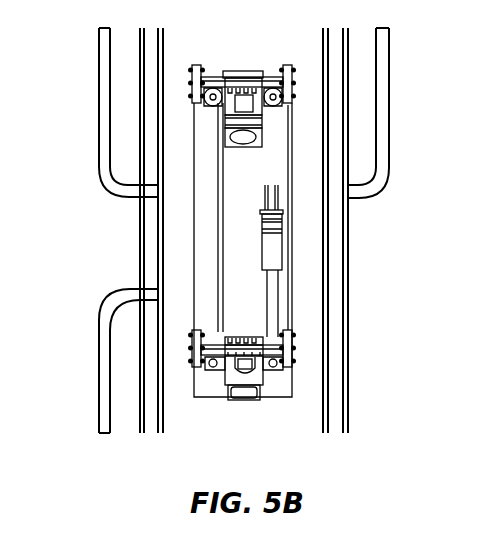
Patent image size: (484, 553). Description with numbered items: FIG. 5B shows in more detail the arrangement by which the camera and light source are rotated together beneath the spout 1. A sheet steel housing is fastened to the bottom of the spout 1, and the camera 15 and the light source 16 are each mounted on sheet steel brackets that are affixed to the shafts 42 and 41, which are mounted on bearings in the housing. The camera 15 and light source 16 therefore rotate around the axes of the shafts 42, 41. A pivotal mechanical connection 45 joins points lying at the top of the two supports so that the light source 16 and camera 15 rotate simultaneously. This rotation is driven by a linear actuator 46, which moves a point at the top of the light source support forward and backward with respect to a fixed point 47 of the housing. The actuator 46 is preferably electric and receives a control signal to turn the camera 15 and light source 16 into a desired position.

The spout 1 is at (168, 93).
The shaft 42 is at (273, 83).
The shaft 41 is at (208, 349).
The pivotal mechanical connection 45 is at (223, 252).
The linear actuator 46 is at (276, 252).
The fixed point 47 is at (287, 213).
The camera 15 is at (243, 138).
The light source 16 is at (243, 397).